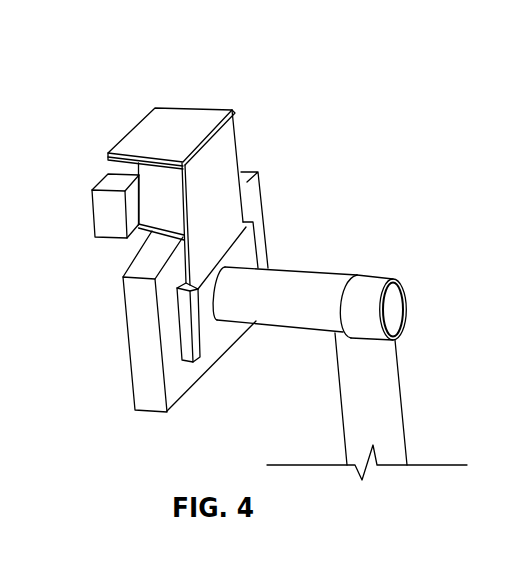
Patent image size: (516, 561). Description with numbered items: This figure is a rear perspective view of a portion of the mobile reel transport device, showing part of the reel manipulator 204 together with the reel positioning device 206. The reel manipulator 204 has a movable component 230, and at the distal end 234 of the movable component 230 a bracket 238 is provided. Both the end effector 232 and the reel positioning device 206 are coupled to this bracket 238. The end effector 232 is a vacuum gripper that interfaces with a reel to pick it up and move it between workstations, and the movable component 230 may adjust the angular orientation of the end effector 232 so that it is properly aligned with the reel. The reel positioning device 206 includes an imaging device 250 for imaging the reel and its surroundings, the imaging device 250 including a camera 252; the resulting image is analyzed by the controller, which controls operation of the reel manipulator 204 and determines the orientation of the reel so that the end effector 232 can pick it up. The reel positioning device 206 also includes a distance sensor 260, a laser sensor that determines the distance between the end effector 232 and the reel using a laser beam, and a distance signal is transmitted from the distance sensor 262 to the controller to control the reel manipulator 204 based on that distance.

The reel manipulator 204 is at (361, 234).
The reel positioning device 206 is at (191, 94).
The movable component 230 is at (388, 397).
The end effector 232 is at (138, 370).
The distal end 234 is at (247, 272).
The bracket 238 is at (218, 180).
The imaging device 250 is at (154, 107).
The camera 252 is at (125, 137).
The distance sensor 260 is at (101, 214).
The distance sensor 262 is at (92, 203).